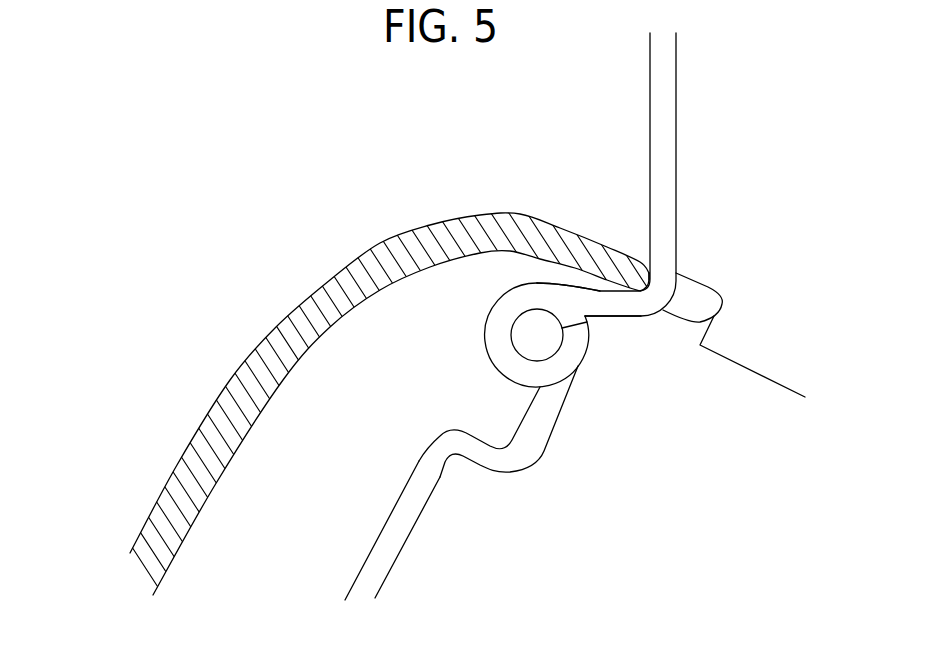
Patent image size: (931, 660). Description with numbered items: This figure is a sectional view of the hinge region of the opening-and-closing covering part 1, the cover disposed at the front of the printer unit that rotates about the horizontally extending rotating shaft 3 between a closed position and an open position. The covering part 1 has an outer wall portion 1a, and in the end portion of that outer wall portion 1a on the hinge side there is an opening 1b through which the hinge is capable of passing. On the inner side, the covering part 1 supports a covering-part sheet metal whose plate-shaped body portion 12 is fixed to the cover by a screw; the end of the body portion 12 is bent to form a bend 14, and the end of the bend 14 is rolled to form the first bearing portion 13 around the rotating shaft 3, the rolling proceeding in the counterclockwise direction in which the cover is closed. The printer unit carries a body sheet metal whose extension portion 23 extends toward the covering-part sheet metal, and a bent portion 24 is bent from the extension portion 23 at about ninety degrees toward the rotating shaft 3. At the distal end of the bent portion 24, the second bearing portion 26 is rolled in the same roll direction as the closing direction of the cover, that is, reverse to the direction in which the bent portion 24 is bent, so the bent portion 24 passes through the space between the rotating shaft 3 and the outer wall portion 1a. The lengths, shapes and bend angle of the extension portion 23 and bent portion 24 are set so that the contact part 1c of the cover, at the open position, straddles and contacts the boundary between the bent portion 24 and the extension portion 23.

The opening-and-closing covering part 1 is at (465, 404).
The outer wall portion 1a is at (290, 328).
The opening 1b is at (708, 307).
The contact part 1c is at (677, 277).
The rotating shaft 3 is at (525, 330).
The body portion 12 is at (377, 555).
The first bearing portion 13 is at (500, 352).
The bend 14 is at (535, 437).
The extension portion 23 is at (670, 196).
The bent portion 24 is at (622, 317).
The second bearing portion 26 is at (494, 335).